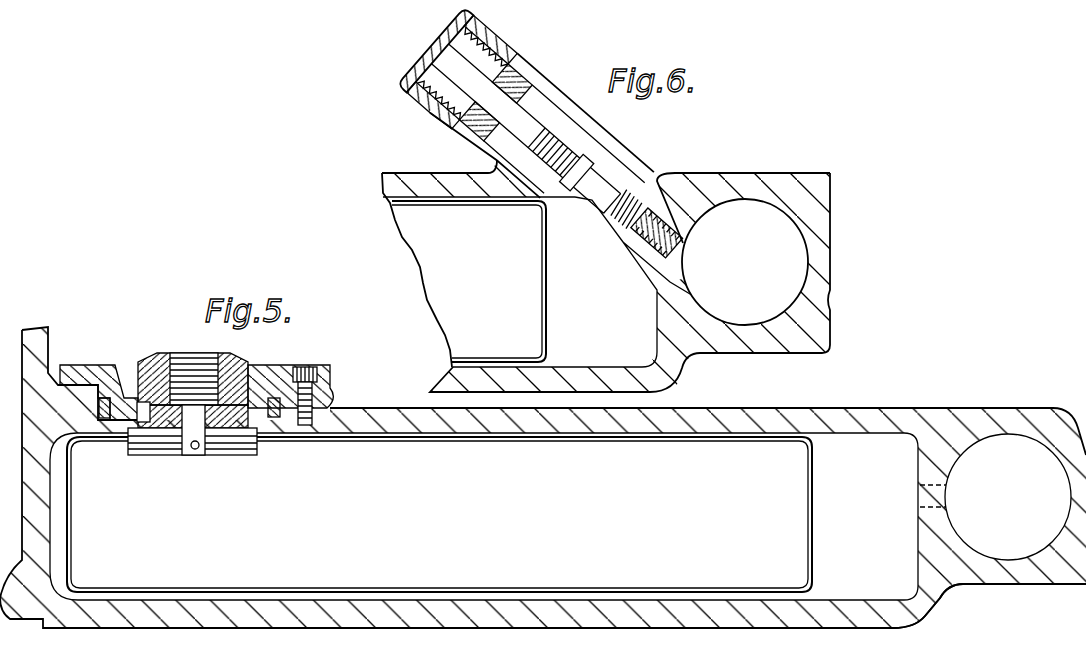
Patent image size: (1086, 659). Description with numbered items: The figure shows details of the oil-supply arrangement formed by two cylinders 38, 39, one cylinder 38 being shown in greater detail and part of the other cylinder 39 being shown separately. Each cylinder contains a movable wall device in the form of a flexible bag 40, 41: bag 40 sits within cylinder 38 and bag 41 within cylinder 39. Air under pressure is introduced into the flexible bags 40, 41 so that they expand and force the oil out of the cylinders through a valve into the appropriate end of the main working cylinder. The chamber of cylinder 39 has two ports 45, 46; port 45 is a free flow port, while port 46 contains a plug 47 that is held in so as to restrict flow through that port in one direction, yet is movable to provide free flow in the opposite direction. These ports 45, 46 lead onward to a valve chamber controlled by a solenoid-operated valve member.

In FIG. 5, the cylinder 38 is at (820, 408).
In FIG. 6, the cylinder 39 is at (650, 387).
In FIG. 5, the flexible bag 40 is at (439, 514).
In FIG. 6, the flexible bag 41 is at (469, 281).
In FIG. 5, the free flow port 45 is at (921, 609).
In FIG. 6, the port 46 is at (684, 243).
In FIG. 6, the plug 47 is at (630, 240).